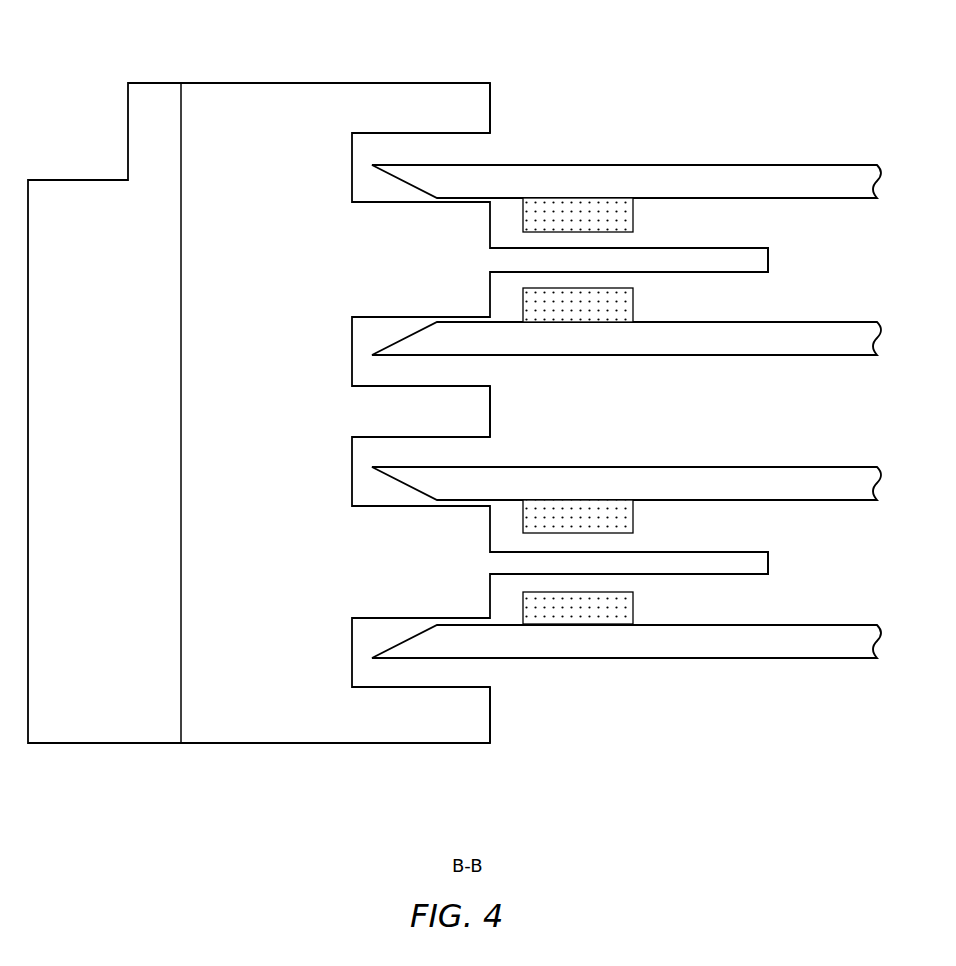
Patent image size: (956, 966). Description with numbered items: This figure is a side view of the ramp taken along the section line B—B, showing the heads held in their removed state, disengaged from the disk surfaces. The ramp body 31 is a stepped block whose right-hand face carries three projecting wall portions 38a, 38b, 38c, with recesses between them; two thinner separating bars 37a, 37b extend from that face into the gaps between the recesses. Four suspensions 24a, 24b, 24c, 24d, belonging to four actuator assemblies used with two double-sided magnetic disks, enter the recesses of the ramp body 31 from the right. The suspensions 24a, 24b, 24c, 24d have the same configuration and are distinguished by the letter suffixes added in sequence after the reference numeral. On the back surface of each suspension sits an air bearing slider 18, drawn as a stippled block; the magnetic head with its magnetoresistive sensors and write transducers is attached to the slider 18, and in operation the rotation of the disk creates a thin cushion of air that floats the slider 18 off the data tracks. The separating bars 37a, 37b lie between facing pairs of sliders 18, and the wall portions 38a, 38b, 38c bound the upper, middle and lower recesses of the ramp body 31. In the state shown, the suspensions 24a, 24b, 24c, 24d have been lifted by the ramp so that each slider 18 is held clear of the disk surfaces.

The connector housing 31 is at (254, 92).
The upper housing wall portion 38a is at (455, 83).
The middle housing wall portion 38b is at (491, 407).
The lower housing wall portion 38c is at (452, 745).
The first separating bar 37a is at (437, 270).
The second separating bar 37b is at (446, 573).
The suspension 24a is at (825, 165).
The suspension 24b is at (797, 357).
The suspension 24c is at (826, 468).
The suspension 24d is at (830, 661).
The air bearing slider 18 is at (634, 214).